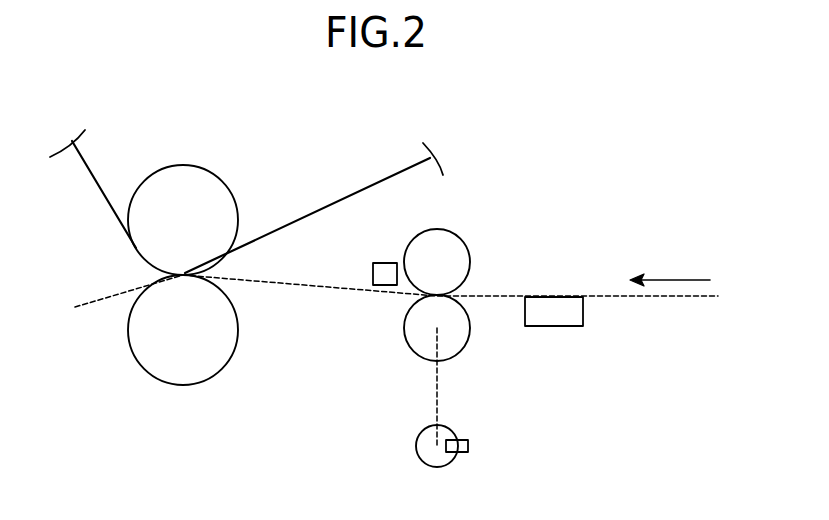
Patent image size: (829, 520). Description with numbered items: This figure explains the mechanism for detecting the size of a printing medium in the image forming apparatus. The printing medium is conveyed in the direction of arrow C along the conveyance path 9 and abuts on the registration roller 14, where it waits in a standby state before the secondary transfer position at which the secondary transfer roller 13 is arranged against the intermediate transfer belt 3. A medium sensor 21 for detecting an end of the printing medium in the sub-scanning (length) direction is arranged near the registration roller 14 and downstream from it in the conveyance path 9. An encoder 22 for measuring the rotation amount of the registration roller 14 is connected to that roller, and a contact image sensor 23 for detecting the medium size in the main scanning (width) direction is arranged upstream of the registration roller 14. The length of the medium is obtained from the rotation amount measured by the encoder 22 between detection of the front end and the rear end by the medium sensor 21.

The intermediate transfer belt 3 is at (327, 207).
The conveyance path 9 is at (307, 285).
The secondary transfer roller 13 is at (183, 385).
The registration roller 14 is at (462, 352).
The medium sensor 21 is at (382, 262).
The encoder 22 is at (417, 441).
The contact image sensor 23 is at (555, 327).
The direction of arrow C is at (670, 270).